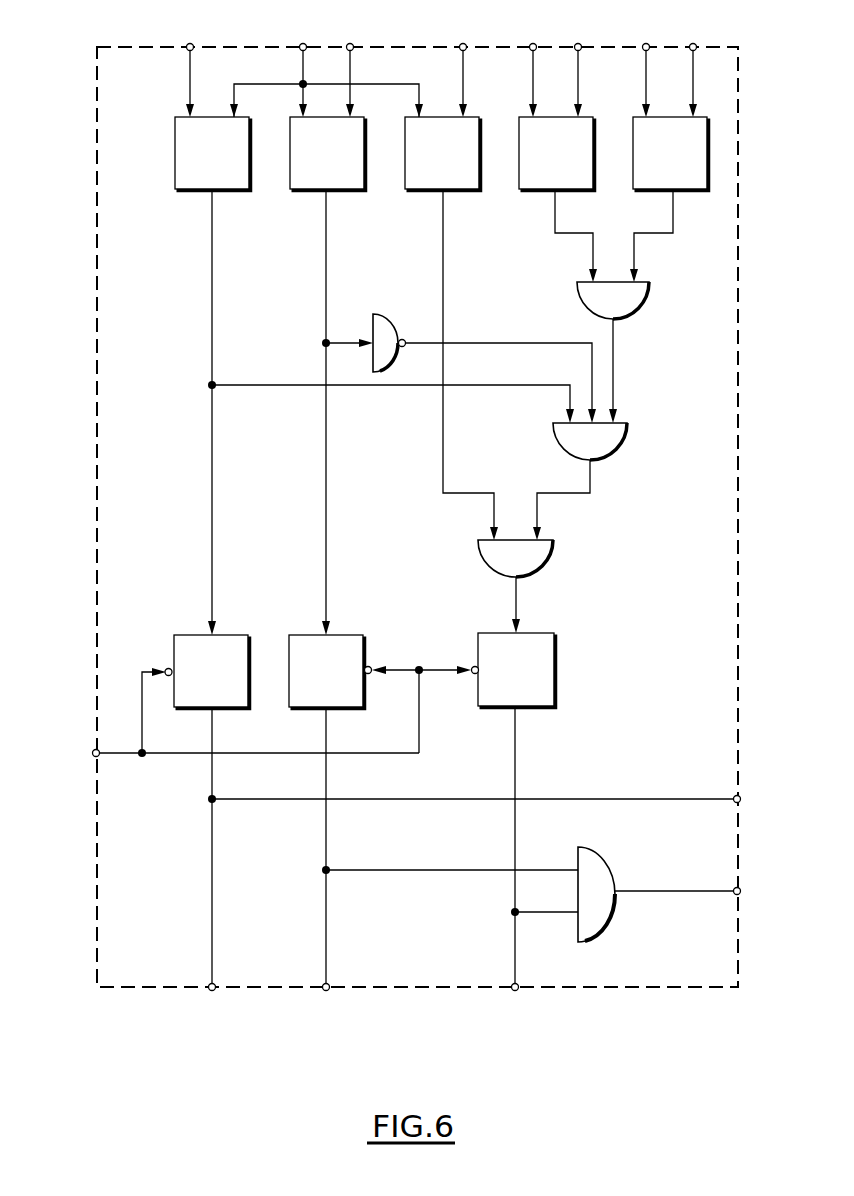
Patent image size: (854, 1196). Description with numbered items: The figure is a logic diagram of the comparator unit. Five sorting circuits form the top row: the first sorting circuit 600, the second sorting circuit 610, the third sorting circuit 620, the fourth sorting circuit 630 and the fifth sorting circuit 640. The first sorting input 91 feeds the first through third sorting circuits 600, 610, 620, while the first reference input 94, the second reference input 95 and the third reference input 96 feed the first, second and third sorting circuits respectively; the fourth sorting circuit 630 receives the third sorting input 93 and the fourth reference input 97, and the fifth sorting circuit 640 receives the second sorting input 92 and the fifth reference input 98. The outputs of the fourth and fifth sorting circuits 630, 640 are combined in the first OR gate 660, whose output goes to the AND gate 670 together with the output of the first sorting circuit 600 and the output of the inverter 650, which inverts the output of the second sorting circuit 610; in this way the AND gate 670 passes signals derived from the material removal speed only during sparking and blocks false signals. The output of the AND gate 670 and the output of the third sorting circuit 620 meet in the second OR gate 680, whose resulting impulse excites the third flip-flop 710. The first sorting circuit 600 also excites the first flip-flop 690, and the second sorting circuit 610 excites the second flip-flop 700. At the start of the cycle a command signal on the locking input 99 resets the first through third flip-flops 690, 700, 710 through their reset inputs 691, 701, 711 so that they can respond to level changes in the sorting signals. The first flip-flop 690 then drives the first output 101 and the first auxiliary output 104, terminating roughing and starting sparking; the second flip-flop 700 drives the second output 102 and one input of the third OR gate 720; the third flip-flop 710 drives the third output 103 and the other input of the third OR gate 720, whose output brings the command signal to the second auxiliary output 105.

The first sorting input 91 is at (326, 67).
The second sorting input 92 is at (693, 67).
The third sorting input 93 is at (533, 67).
The first reference input 94 is at (190, 67).
The second reference input 95 is at (350, 67).
The third reference input 96 is at (463, 67).
The fourth reference input 97 is at (578, 67).
The input terminal 98 is at (646, 67).
The locking input 99 is at (240, 716).
The first output 101 is at (217, 1005).
The second output 102 is at (333, 1004).
The third output 103 is at (524, 1004).
The first auxiliary output 104 is at (497, 799).
The second auxiliary output 105 is at (701, 891).
The first sorting circuit 600 is at (213, 251).
The second sorting circuit 610 is at (328, 230).
The third sorting circuit 620 is at (451, 328).
The fourth sorting circuit 630 is at (558, 199).
The fifth sorting circuit 640 is at (669, 199).
The inverter 650 is at (392, 328).
The first OR gate 660 is at (652, 300).
The AND gate 670 is at (620, 446).
The second OR gate 680 is at (552, 557).
The first flip-flop 690 is at (212, 686).
The second flip-flop 700 is at (327, 665).
The third flip-flop 710 is at (517, 810).
The third OR gate 720 is at (615, 880).
The reset input 691 is at (152, 659).
The reset input 701 is at (392, 656).
The reset input 711 is at (452, 656).